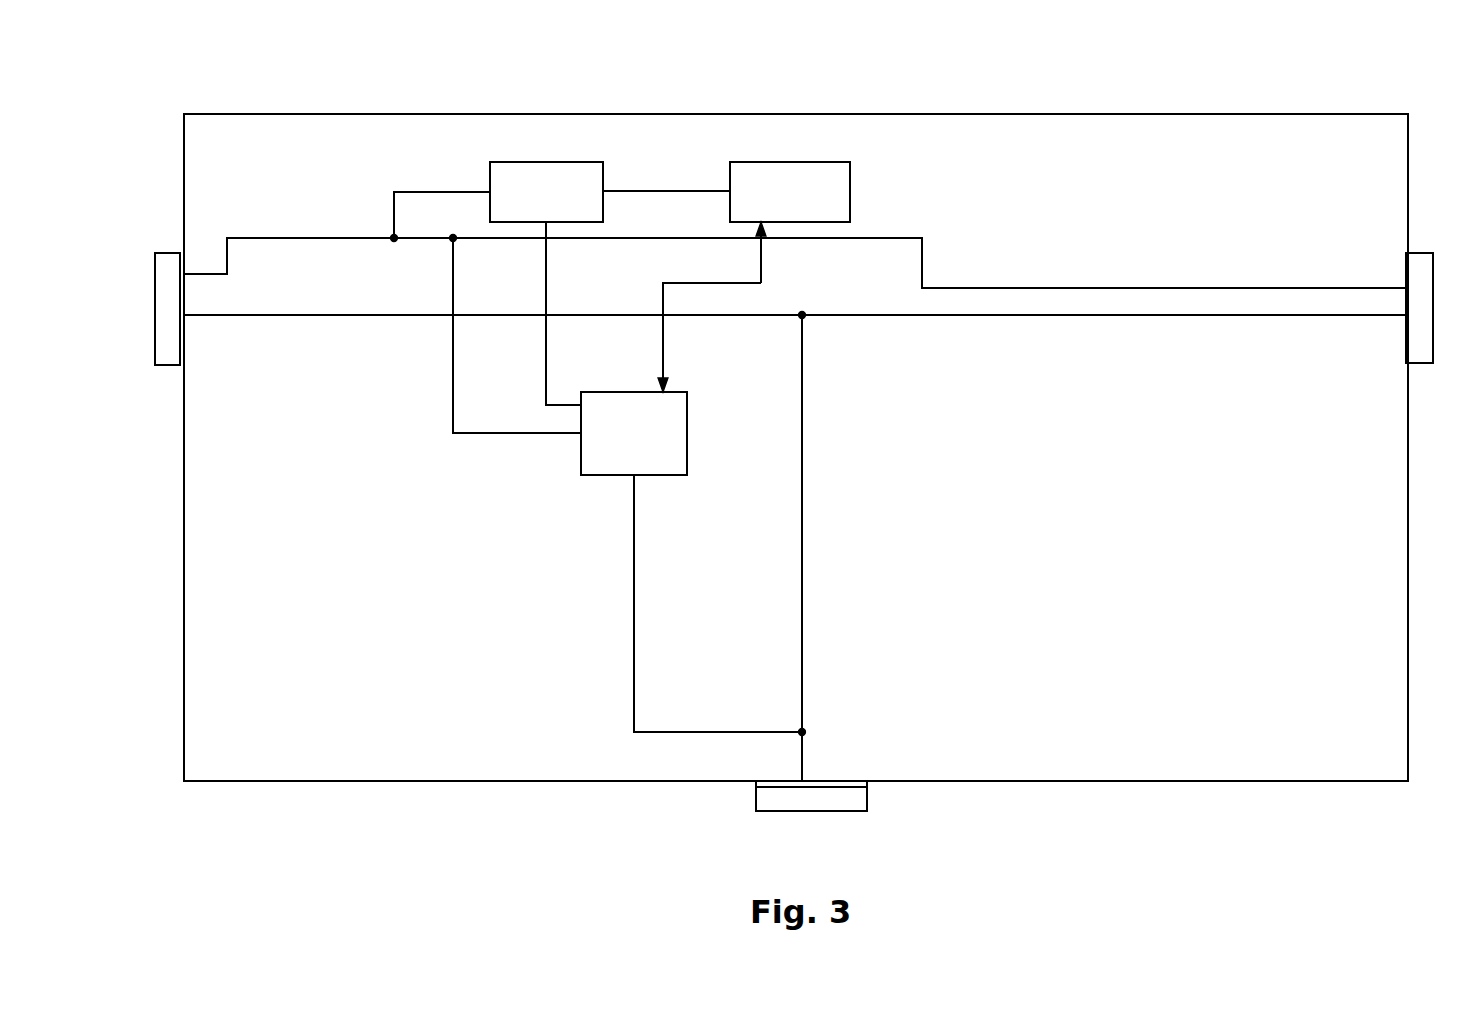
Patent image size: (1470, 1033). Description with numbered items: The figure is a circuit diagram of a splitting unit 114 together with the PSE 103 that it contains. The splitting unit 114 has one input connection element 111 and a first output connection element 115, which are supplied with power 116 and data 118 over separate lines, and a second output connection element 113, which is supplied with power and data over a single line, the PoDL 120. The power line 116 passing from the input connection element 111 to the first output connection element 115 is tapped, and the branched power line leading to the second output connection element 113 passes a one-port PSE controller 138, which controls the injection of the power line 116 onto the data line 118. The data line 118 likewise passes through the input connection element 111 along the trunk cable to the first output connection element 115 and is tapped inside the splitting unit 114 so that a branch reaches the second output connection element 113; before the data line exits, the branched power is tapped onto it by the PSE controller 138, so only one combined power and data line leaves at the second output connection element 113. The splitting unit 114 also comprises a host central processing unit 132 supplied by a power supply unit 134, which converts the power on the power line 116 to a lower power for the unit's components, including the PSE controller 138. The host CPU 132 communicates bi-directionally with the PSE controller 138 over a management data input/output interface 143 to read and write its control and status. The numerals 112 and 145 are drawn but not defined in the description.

The splitting unit 114 is at (185, 75).
The input connection element 111 is at (172, 358).
The connector housing 112 is at (168, 260).
The second output connection element 113 is at (773, 790).
The first output connection element 115 is at (1418, 255).
The power line 116 is at (347, 237).
The data line 118 is at (218, 318).
The PoDL 120 is at (804, 760).
The host central processing unit 132 is at (847, 182).
The power supply unit 134 is at (503, 172).
The 1-port PSE controller 138 is at (634, 433).
The PSE 103 is at (671, 463).
The management data input/output (MDIO) interface 143 is at (764, 266).
The communication line 145 is at (661, 190).